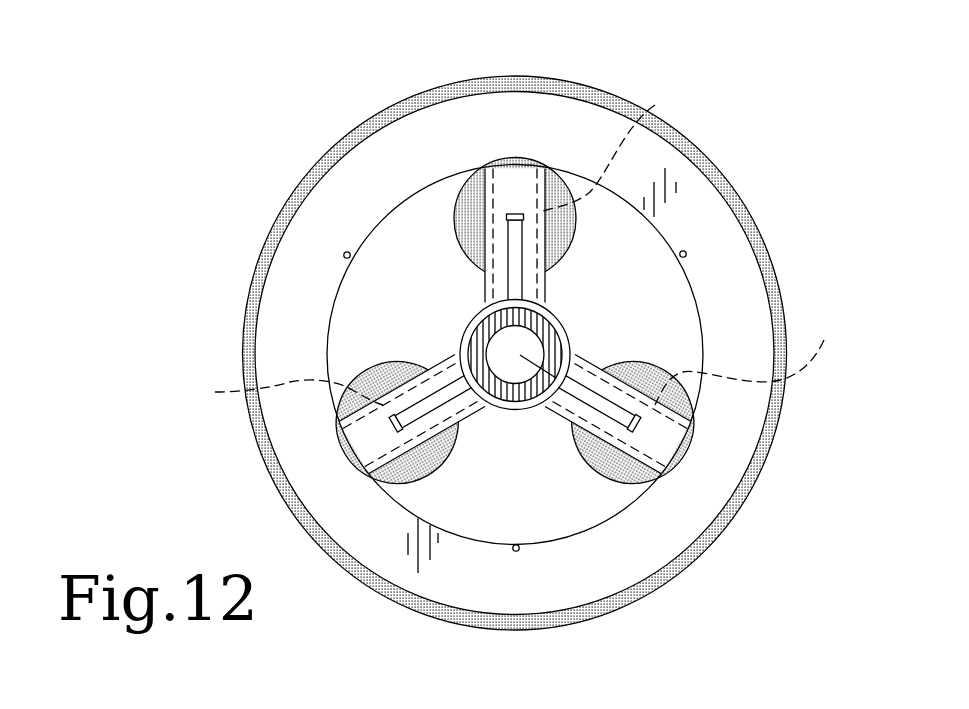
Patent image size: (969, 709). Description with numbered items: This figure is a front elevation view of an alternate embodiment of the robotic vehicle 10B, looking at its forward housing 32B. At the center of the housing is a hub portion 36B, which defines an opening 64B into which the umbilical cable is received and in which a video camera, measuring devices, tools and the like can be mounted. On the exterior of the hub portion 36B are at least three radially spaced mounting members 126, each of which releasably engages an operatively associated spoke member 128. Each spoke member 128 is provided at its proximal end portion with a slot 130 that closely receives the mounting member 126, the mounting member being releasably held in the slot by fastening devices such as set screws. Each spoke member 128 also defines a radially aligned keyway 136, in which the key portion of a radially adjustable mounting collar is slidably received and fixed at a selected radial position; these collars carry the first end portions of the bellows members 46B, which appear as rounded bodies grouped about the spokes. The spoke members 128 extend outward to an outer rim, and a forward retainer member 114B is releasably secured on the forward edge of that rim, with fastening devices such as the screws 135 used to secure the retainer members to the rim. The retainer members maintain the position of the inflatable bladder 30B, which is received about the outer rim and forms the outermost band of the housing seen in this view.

The robotic vehicle 10B is at (195, 153).
The inflatable bladder 30B is at (243, 330).
The forward housing 32B is at (376, 115).
The hub portion 36B is at (517, 410).
The bellows member 46B is at (453, 194).
The opening 64B is at (566, 362).
The forward retainer member 114B is at (338, 188).
The mounting member 126 is at (503, 251).
The spoke member 128 is at (596, 372).
The slot 130 is at (515, 213).
The screw 135 is at (344, 256).
The keyway 136 is at (510, 248).